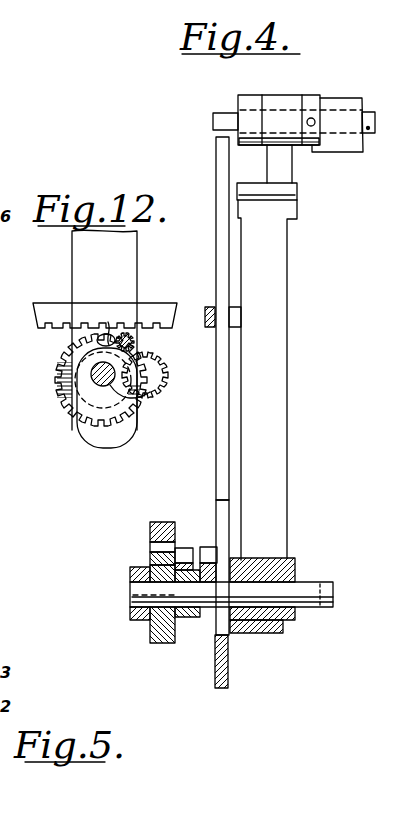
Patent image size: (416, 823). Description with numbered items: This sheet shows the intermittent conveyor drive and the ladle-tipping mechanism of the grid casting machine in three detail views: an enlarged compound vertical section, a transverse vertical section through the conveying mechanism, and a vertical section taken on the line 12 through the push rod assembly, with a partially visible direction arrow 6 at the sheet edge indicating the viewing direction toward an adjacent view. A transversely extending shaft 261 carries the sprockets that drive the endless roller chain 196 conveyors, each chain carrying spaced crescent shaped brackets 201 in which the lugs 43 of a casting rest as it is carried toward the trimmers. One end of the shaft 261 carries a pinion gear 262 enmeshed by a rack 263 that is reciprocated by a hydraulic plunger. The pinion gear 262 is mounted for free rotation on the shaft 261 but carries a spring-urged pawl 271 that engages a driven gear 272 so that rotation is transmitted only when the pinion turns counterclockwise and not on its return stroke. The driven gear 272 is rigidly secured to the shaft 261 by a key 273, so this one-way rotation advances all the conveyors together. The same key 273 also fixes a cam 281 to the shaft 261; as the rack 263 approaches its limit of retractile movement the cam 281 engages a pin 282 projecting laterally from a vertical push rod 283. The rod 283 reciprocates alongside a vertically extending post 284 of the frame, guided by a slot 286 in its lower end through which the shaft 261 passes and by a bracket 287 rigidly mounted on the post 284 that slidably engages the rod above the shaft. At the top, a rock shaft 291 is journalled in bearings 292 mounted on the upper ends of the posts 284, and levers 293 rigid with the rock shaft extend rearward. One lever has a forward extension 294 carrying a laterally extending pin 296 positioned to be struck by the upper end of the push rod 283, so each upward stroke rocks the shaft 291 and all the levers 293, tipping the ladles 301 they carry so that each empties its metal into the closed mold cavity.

In FIG. 12, the shaft 261 is at (142, 392).
In FIG. 5, the shaft 261 is at (318, 586).
In FIG. 12, the pinion gear 262 is at (74, 415).
In FIG. 5, the pinion gear 262 is at (150, 631).
In FIG. 12, the rack 263 is at (51, 308).
In FIG. 5, the rack 263 is at (162, 522).
In FIG. 12, the pawl 271 is at (108, 322).
In FIG. 5, the pawl 271 is at (183, 548).
In FIG. 12, the driven gear 272 is at (62, 388).
In FIG. 5, the driven gear 272 is at (190, 630).
In FIG. 12, the key 273 is at (108, 400).
In FIG. 5, the key 273 is at (130, 596).
In FIG. 12, the cam 281 is at (152, 388).
In FIG. 5, the cam 281 is at (232, 560).
In FIG. 12, the pin 282 is at (137, 343).
In FIG. 5, the pin 282 is at (222, 546).
In FIG. 4, the push rod 283 is at (222, 407).
In FIG. 12, the push rod 283 is at (137, 264).
In FIG. 5, the push rod 283 is at (222, 567).
In FIG. 4, the post 284 is at (283, 233).
In FIG. 5, the slot 286 is at (226, 636).
In FIG. 4, the bracket 287 is at (234, 305).
In FIG. 4, the rock shaft 291 is at (371, 127).
In FIG. 4, the bearings 292 is at (277, 102).
In FIG. 4, the levers 293 is at (313, 100).
In FIG. 4, the forward extension 294 is at (253, 128).
In FIG. 4, the pin 296 is at (213, 122).
In FIG. 4, the ladles 301 is at (353, 148).
In FIG. 4, the section line 12 is at (215, 503).
In FIG. 5, the section line 12 is at (213, 693).
In FIG. 5, the crescent shaped brackets 201 is at (16, 584).
In FIG. 5, the lugs 43 is at (0, 615).
In FIG. 5, the roller chain 196 is at (0, 640).
In FIG. 5, the direction arrow 6 is at (20, 664).